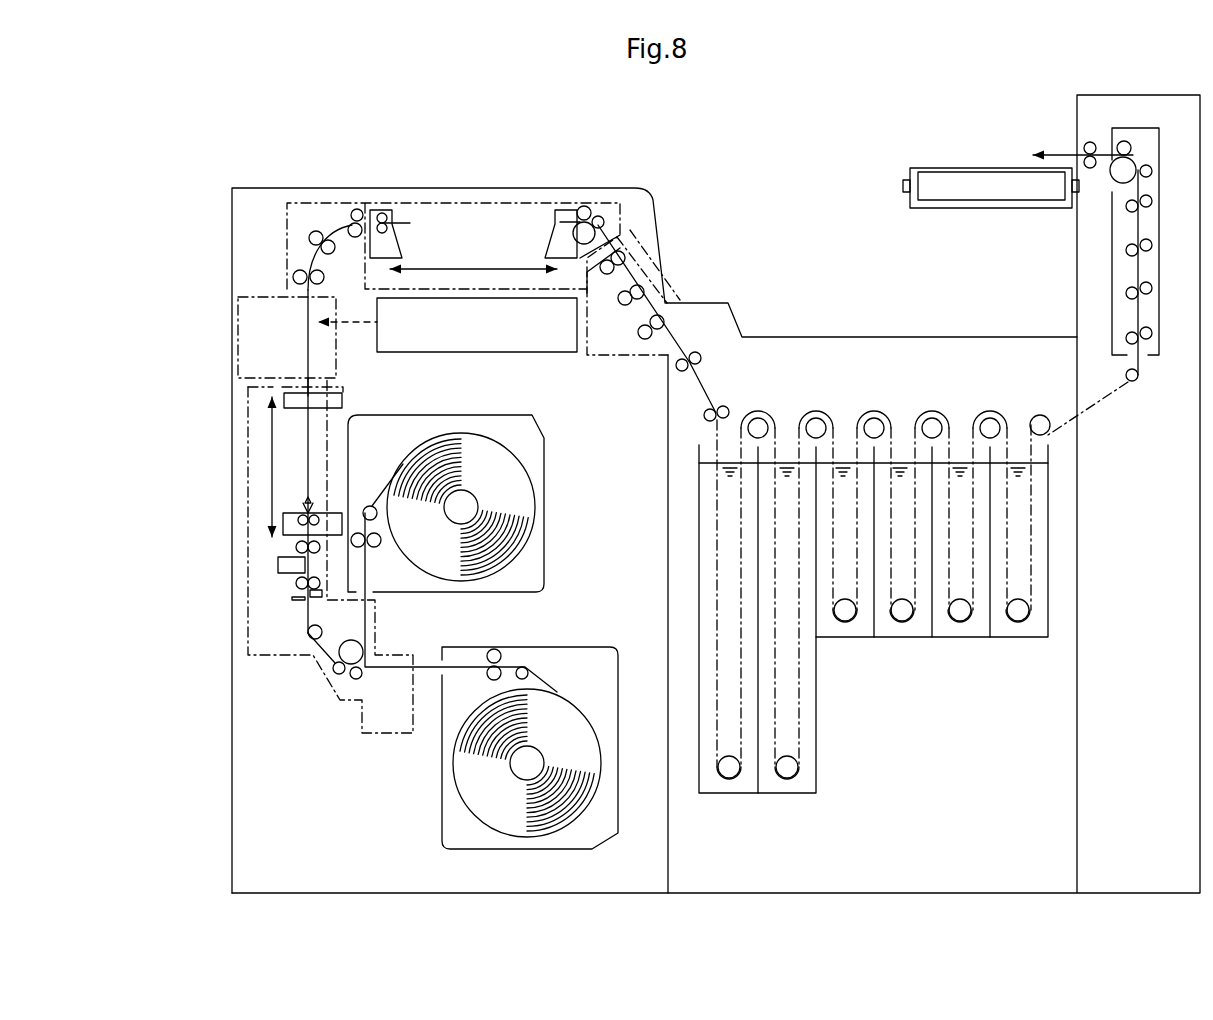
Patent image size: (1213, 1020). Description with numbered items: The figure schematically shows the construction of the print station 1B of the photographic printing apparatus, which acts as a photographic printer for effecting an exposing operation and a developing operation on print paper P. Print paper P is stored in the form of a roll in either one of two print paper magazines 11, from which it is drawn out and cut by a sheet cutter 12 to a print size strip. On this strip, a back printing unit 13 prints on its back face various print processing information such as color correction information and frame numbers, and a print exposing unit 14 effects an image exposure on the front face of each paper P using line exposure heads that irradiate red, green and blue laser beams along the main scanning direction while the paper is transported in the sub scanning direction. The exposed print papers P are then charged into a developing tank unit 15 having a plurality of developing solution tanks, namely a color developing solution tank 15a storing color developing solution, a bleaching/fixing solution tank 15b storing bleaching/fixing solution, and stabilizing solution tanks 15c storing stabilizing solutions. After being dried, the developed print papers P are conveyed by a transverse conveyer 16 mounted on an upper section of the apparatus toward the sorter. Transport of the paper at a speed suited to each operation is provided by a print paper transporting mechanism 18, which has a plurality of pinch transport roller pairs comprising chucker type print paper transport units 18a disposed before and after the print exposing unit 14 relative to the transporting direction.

The print station 1B is at (188, 183).
The print paper magazines 11 is at (550, 557).
The sheet cutter 12 is at (292, 598).
The back printing unit 13 is at (278, 563).
The print exposing unit 14 is at (505, 340).
The developing tank unit 15 is at (948, 707).
The color developing solution tank 15a is at (735, 785).
The bleaching/fixing solution tank 15b is at (805, 783).
The stabilizing solution tanks 15c is at (1018, 632).
The transverse conveyer 16 is at (952, 168).
The print paper transporting mechanism 18 is at (300, 232).
The chucker type print paper transport units 18a is at (500, 202).
The print paper P is at (293, 270).